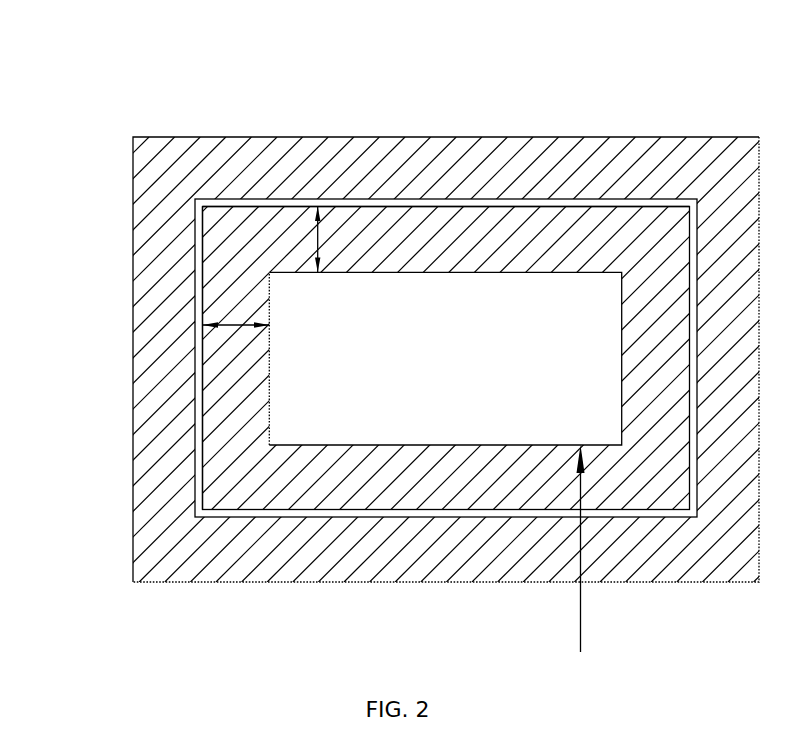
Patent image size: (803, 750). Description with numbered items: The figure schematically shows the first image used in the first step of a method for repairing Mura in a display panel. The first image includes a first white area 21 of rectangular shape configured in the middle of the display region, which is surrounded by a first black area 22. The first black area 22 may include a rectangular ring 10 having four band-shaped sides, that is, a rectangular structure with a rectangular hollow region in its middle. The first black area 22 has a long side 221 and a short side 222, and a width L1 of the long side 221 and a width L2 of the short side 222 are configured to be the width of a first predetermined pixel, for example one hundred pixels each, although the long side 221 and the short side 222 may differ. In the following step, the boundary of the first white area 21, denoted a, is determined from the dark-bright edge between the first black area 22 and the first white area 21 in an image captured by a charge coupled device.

The rectangular ring 10 is at (328, 512).
The first white area 21 is at (472, 315).
The first black area 22 is at (235, 238).
The long side 221 is at (390, 238).
The short side 222 is at (243, 405).
The boundary of the first white area a is at (580, 561).
The width of the long side L1 is at (334, 240).
The width of the short side L2 is at (236, 312).